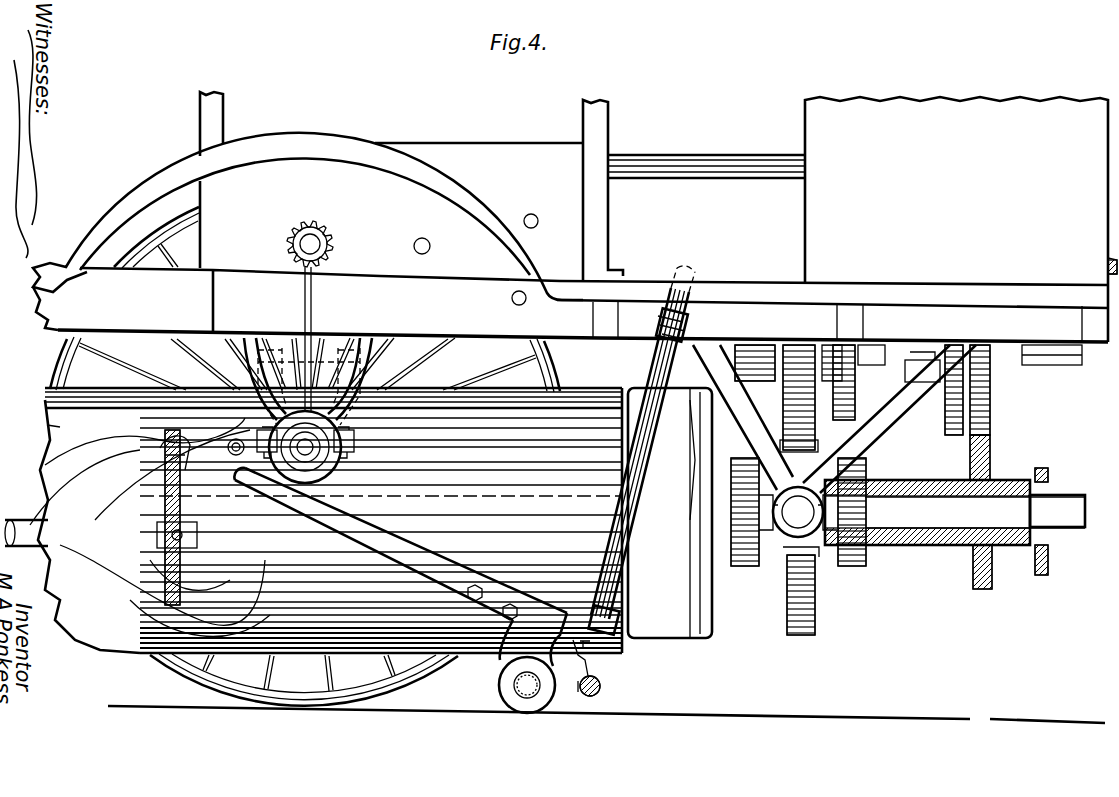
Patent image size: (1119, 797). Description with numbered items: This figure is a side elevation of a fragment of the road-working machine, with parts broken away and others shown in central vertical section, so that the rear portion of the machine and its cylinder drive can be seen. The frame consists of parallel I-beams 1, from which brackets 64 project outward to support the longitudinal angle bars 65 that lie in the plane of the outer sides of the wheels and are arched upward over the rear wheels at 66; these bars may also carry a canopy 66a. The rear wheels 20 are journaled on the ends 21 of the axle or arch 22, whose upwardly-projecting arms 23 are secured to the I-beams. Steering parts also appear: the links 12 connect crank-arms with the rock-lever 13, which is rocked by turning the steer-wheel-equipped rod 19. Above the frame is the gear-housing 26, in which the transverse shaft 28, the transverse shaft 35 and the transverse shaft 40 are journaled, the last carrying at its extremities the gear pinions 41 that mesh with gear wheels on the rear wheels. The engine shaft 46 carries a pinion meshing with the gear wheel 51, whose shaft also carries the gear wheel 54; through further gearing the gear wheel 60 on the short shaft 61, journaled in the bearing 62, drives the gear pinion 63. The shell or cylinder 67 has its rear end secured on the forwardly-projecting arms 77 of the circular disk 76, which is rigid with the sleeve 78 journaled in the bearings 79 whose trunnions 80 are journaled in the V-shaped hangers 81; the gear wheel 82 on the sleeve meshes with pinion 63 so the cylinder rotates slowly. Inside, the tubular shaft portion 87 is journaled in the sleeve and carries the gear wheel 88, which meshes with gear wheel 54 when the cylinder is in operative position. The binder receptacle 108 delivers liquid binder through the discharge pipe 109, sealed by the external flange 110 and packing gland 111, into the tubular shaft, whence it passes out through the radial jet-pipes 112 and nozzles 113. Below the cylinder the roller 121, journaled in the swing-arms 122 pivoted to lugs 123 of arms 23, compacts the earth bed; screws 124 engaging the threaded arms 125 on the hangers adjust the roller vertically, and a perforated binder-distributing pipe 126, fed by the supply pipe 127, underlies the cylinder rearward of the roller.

The I-beams 1 is at (570, 305).
The links 12 is at (250, 530).
The rock-lever 13 is at (512, 298).
The steer-wheel-equipped rod 19 is at (920, 382).
The rear wheels 20 is at (302, 694).
The axle ends 21 is at (340, 467).
The axle or arch 22 is at (375, 414).
The upwardly-projecting arms 23 is at (357, 422).
The gear-housing 26 is at (485, 143).
The transverse shaft 28 is at (533, 214).
The transverse shaft 35 is at (425, 238).
The transverse shaft 40 is at (296, 242).
The gear pinions 41 is at (309, 221).
The engine shaft 46 is at (683, 162).
The gear wheel 51 is at (990, 375).
The gear wheel 54 is at (990, 407).
The gear wheel 60 is at (860, 427).
The short shaft 61 is at (790, 348).
The bearing 62 is at (742, 348).
The gear pinion 63 is at (800, 348).
The brackets 64 is at (1082, 326).
The angle bars 65 is at (648, 285).
The arched portion 66 is at (320, 134).
The canopy 66a is at (609, 103).
The cylinder 67 is at (47, 428).
The circular disk 76 is at (690, 458).
The forwardly-projecting arms 77 is at (673, 640).
The sleeve 78 is at (947, 545).
The bearings 79 is at (863, 570).
The trunnions 80 is at (798, 512).
The V-shaped hangers 81 is at (860, 437).
The gear wheel 82 is at (803, 636).
The tubular shaft portion 87 is at (943, 483).
The gear wheel 88 is at (980, 589).
The binder receptacle 108 is at (956, 219).
The discharge pipe 109 is at (1060, 496).
The external flange 110 is at (1015, 563).
The packing gland 111 is at (1043, 480).
The radial jet-pipes 112 is at (157, 603).
The nozzles 113 is at (207, 603).
The roller 121 is at (532, 711).
The swing-arms 122 is at (423, 552).
The lugs 123 is at (240, 468).
The screws 124 is at (633, 495).
The threaded arms 125 is at (652, 358).
The perforated binder-distributing pipe 126 is at (602, 686).
The supply pipe 127 is at (597, 667).